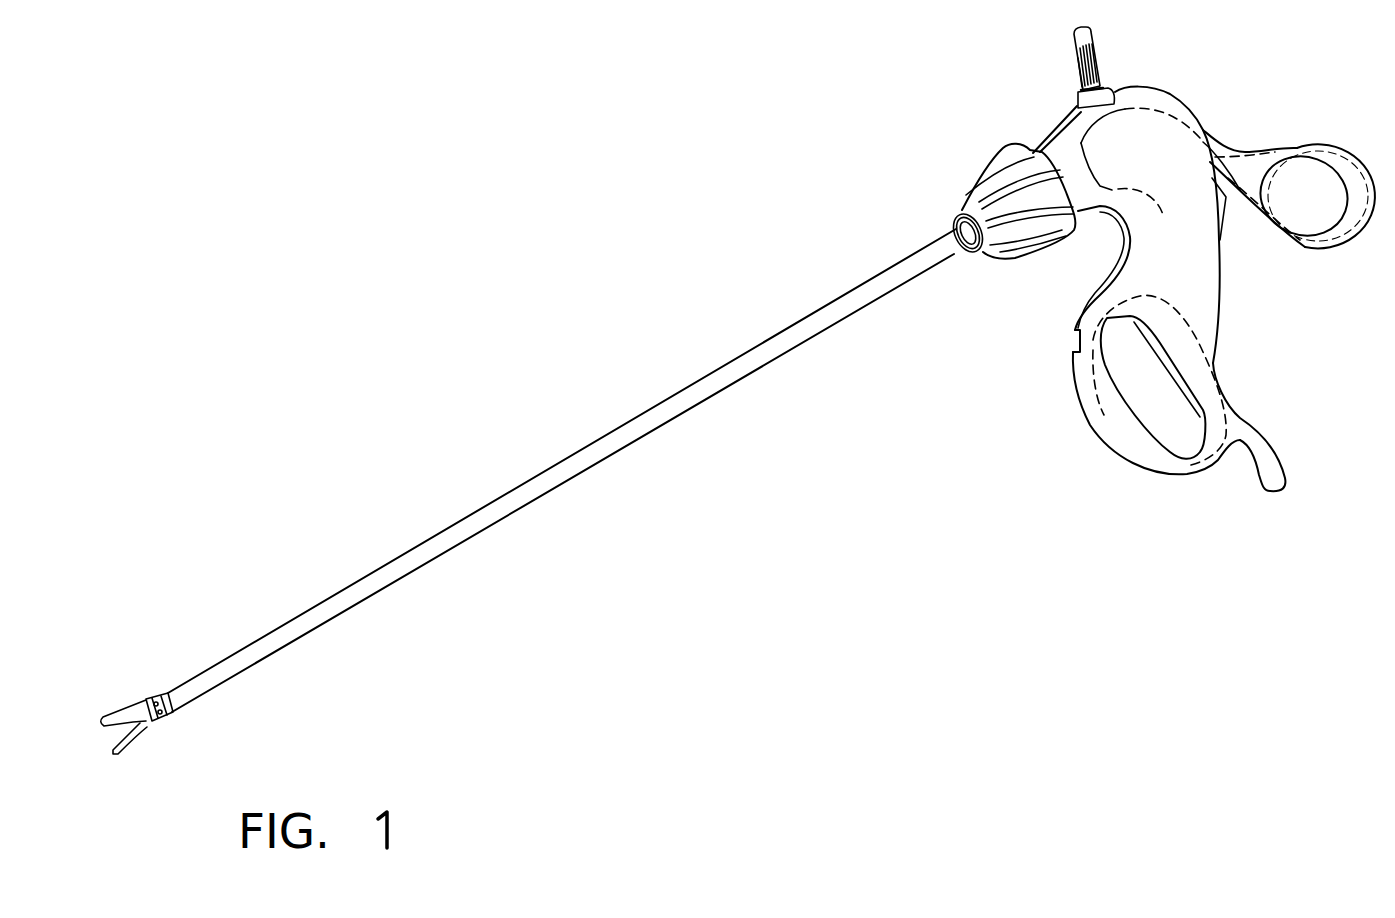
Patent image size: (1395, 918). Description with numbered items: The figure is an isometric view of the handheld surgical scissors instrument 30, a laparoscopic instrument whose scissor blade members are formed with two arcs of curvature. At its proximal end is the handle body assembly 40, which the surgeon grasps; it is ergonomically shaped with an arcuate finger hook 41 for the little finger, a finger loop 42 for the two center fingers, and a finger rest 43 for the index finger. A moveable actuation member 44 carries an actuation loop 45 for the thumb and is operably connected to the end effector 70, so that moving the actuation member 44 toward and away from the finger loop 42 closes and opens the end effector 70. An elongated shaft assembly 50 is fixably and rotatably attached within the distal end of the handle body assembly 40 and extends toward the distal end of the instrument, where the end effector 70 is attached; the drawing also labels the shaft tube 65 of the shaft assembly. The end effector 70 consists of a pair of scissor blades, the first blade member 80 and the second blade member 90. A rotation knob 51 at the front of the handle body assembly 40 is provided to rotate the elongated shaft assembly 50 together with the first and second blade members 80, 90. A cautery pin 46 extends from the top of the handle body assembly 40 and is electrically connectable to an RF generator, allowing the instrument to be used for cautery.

The surgical scissors instrument 30 is at (592, 532).
The handle body assembly 40 is at (1072, 435).
The arcuate finger hook 41 is at (1262, 482).
The finger loop 42 is at (1140, 462).
The finger rest 43 is at (1098, 240).
The moveable actuation member 44 is at (1277, 120).
The actuation loop 45 is at (1309, 251).
The cautery pin 46 is at (1078, 63).
The elongated shaft assembly 50 is at (627, 396).
The rotation knob 51 is at (990, 167).
The outer tube 65 is at (803, 320).
The end effector 70 is at (170, 731).
The first blade member 80 is at (133, 748).
The second blade member 90 is at (124, 700).